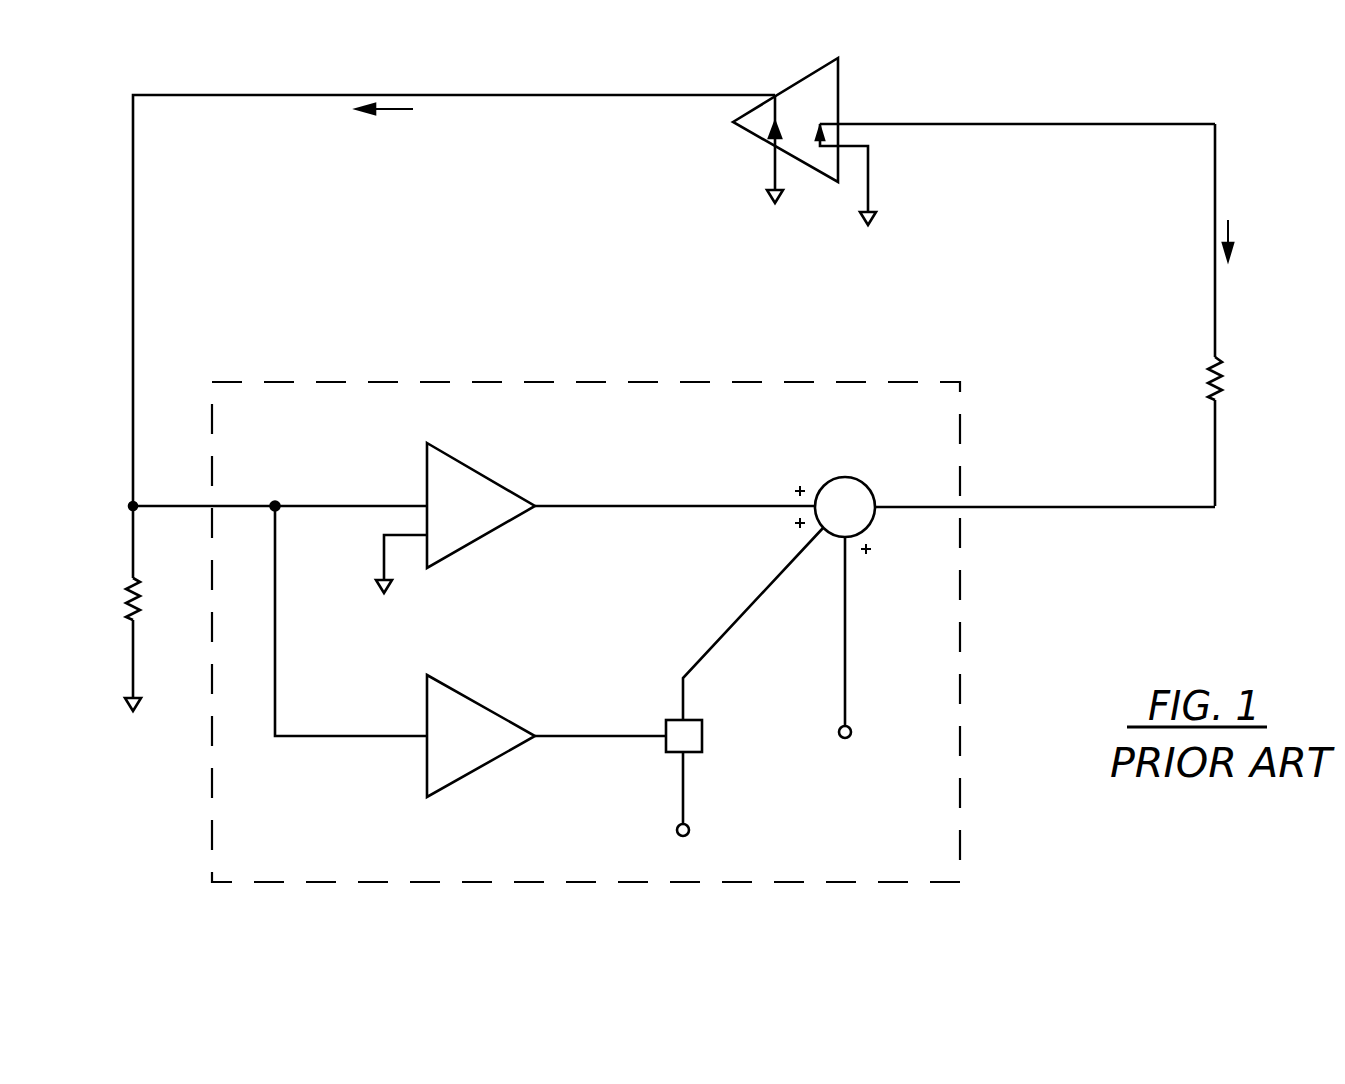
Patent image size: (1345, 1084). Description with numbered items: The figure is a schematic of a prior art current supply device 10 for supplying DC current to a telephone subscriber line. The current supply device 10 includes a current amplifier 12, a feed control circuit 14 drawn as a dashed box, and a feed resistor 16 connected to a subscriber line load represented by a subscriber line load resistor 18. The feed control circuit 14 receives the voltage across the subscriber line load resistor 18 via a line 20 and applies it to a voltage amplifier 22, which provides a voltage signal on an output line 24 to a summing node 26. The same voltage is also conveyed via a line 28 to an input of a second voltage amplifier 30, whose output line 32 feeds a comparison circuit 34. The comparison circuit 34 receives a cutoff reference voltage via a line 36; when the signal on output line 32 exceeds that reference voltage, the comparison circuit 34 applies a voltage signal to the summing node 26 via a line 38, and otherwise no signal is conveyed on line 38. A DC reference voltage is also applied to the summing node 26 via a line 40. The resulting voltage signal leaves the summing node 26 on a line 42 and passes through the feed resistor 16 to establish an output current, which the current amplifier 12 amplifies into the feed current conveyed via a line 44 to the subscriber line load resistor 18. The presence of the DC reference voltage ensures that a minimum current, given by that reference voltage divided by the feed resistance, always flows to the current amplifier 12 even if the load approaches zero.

The current supply device 10 is at (1193, 57).
The current amplifier 12 is at (846, 78).
The feed control circuit 14 is at (962, 596).
The feed resistor 16 is at (1226, 372).
The subscriber line load resistor 18 is at (128, 592).
The line 20 is at (255, 506).
The voltage amplifier 22 is at (480, 470).
The output line 24 is at (600, 506).
The summing node 26 is at (862, 481).
The line 28 is at (340, 737).
The voltage amplifier 30 is at (468, 772).
The output line 32 is at (577, 736).
The comparison circuit 34 is at (703, 736).
The line 36 is at (680, 800).
The line 38 is at (775, 570).
The line 40 is at (846, 630).
The line 42 is at (1108, 510).
The line 44 is at (582, 95).